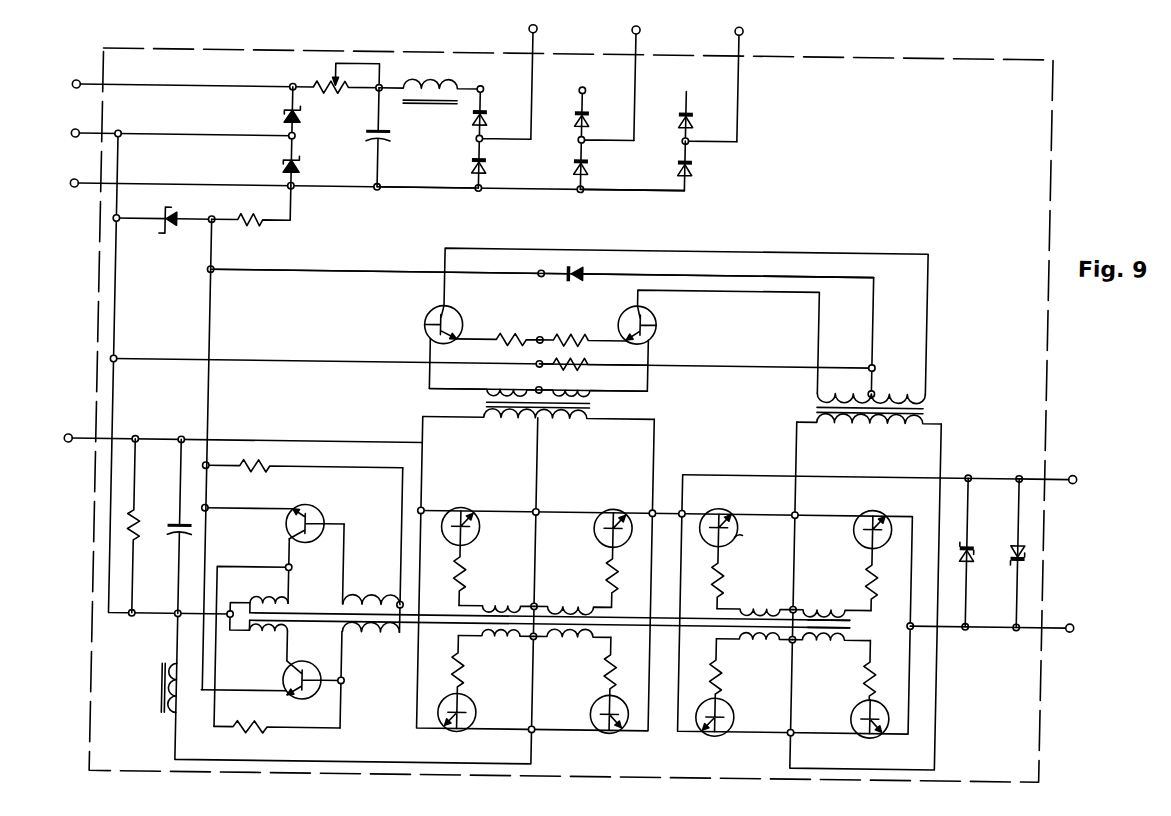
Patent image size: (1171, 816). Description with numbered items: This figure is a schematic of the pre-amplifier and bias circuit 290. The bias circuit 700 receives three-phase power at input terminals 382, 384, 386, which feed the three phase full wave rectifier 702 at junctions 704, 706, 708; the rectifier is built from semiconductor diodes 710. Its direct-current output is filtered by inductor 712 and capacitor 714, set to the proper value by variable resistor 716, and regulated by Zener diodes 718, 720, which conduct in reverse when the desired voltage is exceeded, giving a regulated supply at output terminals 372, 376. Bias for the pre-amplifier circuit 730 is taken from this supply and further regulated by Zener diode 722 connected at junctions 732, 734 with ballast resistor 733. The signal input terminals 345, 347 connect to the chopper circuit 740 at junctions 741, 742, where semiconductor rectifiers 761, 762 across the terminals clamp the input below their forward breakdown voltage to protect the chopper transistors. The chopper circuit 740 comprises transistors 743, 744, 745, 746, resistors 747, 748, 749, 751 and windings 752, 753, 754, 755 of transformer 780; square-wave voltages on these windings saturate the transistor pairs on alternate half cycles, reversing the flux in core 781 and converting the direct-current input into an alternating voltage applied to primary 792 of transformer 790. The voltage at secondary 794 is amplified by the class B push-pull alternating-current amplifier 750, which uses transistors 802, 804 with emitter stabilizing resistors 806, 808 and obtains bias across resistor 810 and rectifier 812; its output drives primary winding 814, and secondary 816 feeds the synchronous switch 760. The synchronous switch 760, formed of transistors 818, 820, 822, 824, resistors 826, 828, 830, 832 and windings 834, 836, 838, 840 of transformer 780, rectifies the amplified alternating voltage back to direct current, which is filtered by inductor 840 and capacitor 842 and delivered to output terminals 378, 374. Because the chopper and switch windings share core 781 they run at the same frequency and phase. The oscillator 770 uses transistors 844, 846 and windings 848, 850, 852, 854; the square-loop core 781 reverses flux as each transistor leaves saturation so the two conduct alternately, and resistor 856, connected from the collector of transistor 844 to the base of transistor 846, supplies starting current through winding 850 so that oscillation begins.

The pre-amplifier and bias circuit 290 is at (1057, 184).
The input terminal 345 is at (1080, 464).
The input terminal 347 is at (1080, 614).
The output terminal 372 is at (72, 80).
The output terminal 374 is at (72, 129).
The output terminal 376 is at (73, 179).
The output terminal 378 is at (76, 434).
The input terminal 382 is at (538, 24).
The input terminal 384 is at (641, 24).
The input terminal 386 is at (744, 24).
The bias circuit 700 is at (417, 210).
The three phase full wave rectifier 702 is at (607, 208).
The junction 704 is at (486, 135).
The junction 706 is at (588, 136).
The junction 708 is at (692, 135).
The semiconductor diodes 710 is at (697, 162).
The inductor 712 is at (434, 76).
The capacitor 714 is at (395, 132).
The variable resistor 716 is at (330, 77).
The Zener diode 718 is at (285, 114).
The Zener diode 720 is at (286, 164).
The Zener diode 722 is at (170, 208).
The pre-amplifier circuit 730 is at (345, 431).
The junction 732 is at (123, 221).
The ballast resistor 733 is at (254, 229).
The junction 734 is at (216, 214).
The chopper circuit 740 is at (769, 757).
The junction 741 is at (925, 616).
The junction 742 is at (693, 505).
The transistor 743 is at (751, 527).
The transistor 744 is at (882, 501).
The transistor 745 is at (718, 729).
The transistor 746 is at (876, 727).
The resistor 747 is at (744, 569).
The resistor 748 is at (875, 568).
The resistor 749 is at (743, 667).
The alternating-current amplifier 750 is at (371, 344).
The resistor 751 is at (873, 667).
The winding 752 is at (787, 597).
The winding 753 is at (821, 597).
The winding 754 is at (762, 633).
The winding 755 is at (827, 632).
The synchronous switch circuit 760 is at (569, 748).
The semiconductor rectifier 761 is at (983, 541).
The zener diode 762 is at (1024, 548).
The oscillator circuit 770 is at (314, 747).
The transformer 780 is at (879, 626).
The core 781 is at (321, 608).
The transformer 790 is at (822, 399).
The primary 792 is at (875, 416).
The secondary 794 is at (871, 386).
The transistor 802 is at (652, 306).
The transistor 804 is at (439, 304).
The resistor 806 is at (562, 328).
The resistor 808 is at (531, 327).
The resistor 810 is at (588, 355).
The rectifier 812 is at (588, 268).
The primary winding 814 is at (520, 382).
The secondary 816 is at (542, 414).
The transistor 818 is at (466, 502).
The transistor 820 is at (610, 501).
The transistor 822 is at (458, 726).
The transistor 824 is at (628, 726).
The resistor 826 is at (480, 569).
The resistor 828 is at (609, 569).
The resistor 830 is at (483, 667).
The resistor 832 is at (613, 667).
The winding 834 is at (527, 597).
The winding 836 is at (560, 597).
The winding 838 is at (531, 633).
The winding 840 is at (563, 633).
The capacitor 842 is at (184, 522).
The transistor 844 is at (297, 520).
The transistor 846 is at (298, 678).
The winding 848 is at (367, 599).
The winding 850 is at (289, 598).
The winding 852 is at (291, 629).
The winding 854 is at (365, 629).
The resistor 856 is at (266, 731).